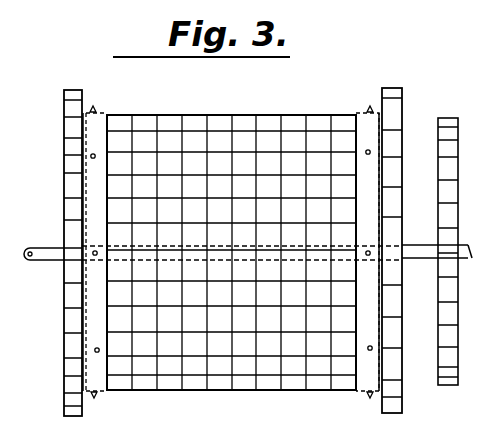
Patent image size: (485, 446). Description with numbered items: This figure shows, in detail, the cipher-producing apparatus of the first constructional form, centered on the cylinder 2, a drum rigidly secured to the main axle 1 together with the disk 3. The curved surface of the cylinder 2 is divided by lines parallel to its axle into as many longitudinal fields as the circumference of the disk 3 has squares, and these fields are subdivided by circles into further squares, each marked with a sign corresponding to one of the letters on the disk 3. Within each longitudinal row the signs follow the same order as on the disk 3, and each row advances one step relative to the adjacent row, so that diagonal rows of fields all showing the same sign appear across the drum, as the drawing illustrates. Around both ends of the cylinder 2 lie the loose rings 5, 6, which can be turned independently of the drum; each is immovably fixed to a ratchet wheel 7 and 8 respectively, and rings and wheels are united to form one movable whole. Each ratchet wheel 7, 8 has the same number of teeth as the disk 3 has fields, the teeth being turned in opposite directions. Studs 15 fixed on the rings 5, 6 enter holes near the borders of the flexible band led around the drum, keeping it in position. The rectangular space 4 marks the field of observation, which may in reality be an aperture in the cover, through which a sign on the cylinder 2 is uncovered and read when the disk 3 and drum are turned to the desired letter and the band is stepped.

The main axle 1 is at (470, 250).
The cylinder 2 is at (294, 117).
The disk 3 is at (458, 173).
The rectangular space 4 is at (110, 196).
The loose ring 5 is at (96, 300).
The loose ring 6 is at (368, 304).
The ratchet wheel 7 is at (64, 104).
The ratchet wheel 8 is at (396, 101).
The stud 15 is at (371, 152).